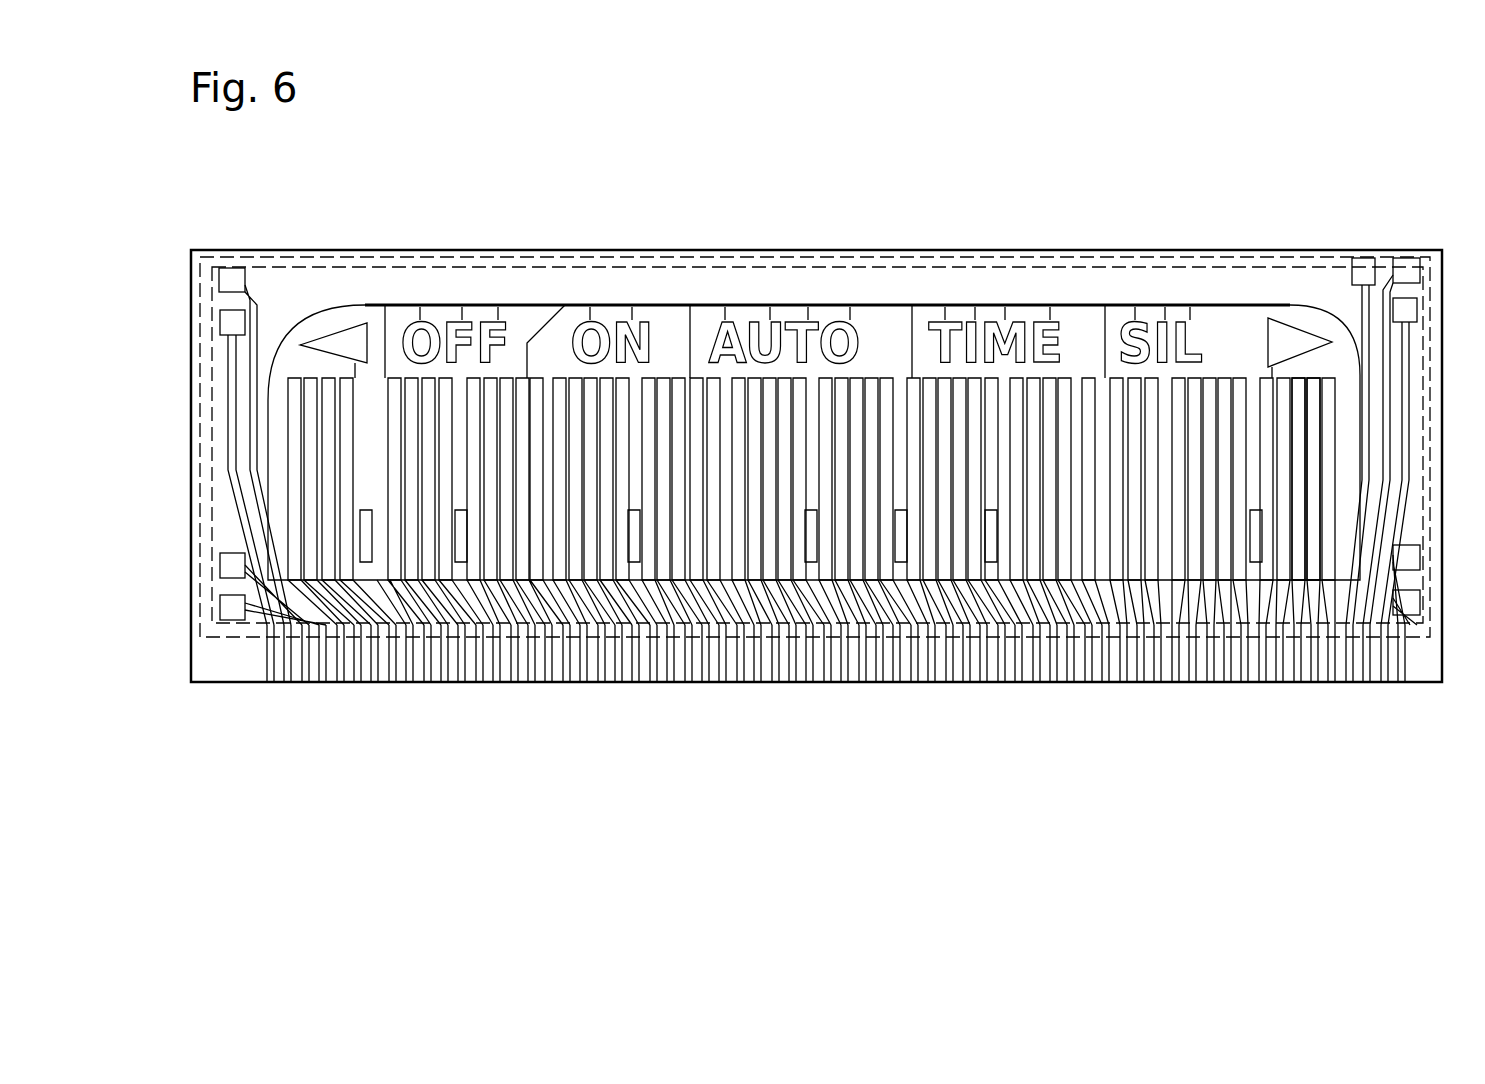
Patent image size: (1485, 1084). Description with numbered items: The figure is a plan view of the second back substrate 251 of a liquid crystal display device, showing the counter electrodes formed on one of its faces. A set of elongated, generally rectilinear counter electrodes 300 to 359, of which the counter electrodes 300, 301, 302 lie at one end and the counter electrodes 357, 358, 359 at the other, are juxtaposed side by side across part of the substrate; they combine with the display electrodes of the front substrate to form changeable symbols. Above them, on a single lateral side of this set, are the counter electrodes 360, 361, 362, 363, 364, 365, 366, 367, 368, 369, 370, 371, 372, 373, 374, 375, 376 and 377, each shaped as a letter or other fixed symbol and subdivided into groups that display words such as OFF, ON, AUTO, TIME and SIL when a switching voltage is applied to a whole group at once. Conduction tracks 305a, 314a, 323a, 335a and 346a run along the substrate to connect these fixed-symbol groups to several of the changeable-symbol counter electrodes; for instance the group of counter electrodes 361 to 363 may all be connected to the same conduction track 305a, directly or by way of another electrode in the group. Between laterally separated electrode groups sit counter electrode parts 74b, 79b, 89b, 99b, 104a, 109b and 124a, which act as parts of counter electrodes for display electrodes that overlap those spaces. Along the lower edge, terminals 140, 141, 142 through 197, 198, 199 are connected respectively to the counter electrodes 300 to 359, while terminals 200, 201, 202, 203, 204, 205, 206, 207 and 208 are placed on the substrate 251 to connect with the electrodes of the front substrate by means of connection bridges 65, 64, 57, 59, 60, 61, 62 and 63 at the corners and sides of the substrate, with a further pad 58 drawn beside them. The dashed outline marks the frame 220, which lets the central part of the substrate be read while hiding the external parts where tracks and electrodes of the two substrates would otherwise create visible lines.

The second back substrate 251 is at (1427, 82).
The connection bridge 57 is at (232, 278).
The connection bridge 64 is at (228, 322).
The connection bridge 65 is at (222, 567).
The contact pad 58 is at (224, 622).
The connection bridge 59 is at (1366, 270).
The connection bridge 60 is at (1407, 270).
The connection bridge 61 is at (1412, 310).
The connection bridge 62 is at (1422, 558).
The connection bridge 63 is at (1422, 605).
The frame 220 is at (1412, 395).
The counter electrode 300 is at (294, 382).
The counter electrode 301 is at (311, 382).
The counter electrode 302 is at (329, 382).
The fixed-symbol counter electrode 360 is at (348, 382).
The fixed-symbol counter electrode 361 is at (395, 382).
The fixed-symbol counter electrode 362 is at (412, 382).
The fixed-symbol counter electrode 363 is at (430, 382).
The conduction track 305a is at (520, 305).
The fixed-symbol counter electrode 364 is at (565, 305).
The conduction track 314a is at (612, 305).
The fixed-symbol counter electrode 365 is at (660, 305).
The fixed-symbol counter electrode 366 is at (693, 330).
The fixed-symbol counter electrode 367 is at (735, 305).
The conduction track 323a is at (775, 305).
The fixed-symbol counter electrode 368 is at (812, 305).
The fixed-symbol counter electrode 369 is at (855, 305).
The conduction track 335a is at (895, 305).
The fixed-symbol counter electrode 370 is at (938, 305).
The fixed-symbol counter electrode 371 is at (975, 305).
The fixed-symbol counter electrode 372 is at (1005, 305).
The fixed-symbol counter electrode 373 is at (1055, 305).
The conduction track 346a is at (1095, 305).
The fixed-symbol counter electrode 374 is at (1128, 305).
The fixed-symbol counter electrode 375 is at (1165, 305).
The fixed-symbol counter electrode 376 is at (1195, 305).
The fixed-symbol counter electrode 377 is at (1285, 350).
The counter electrode 357 is at (1300, 382).
The counter electrode 358 is at (1314, 382).
The counter electrode 359 is at (1328, 382).
The counter electrode part 74b is at (365, 540).
The counter electrode part 79b is at (460, 565).
The counter electrode part 89b is at (632, 565).
The counter electrode part 99b is at (811, 565).
The counter electrode part 104a is at (900, 565).
The counter electrode part 109b is at (990, 565).
The counter electrode part 124a is at (1255, 565).
The terminal 200 is at (240, 640).
The terminal 201 is at (275, 640).
The terminal 202 is at (295, 650).
The terminal 203 is at (310, 650).
The terminal 140 is at (345, 655).
The terminal 141 is at (335, 650).
The terminal 142 is at (405, 650).
The terminal 197 is at (1245, 655).
The terminal 198 is at (1260, 645).
The terminal 199 is at (1275, 655).
The terminal 204 is at (1295, 650).
The terminal 205 is at (1315, 655).
The terminal 206 is at (1330, 650).
The terminal 207 is at (1345, 650).
The terminal 208 is at (1360, 650).